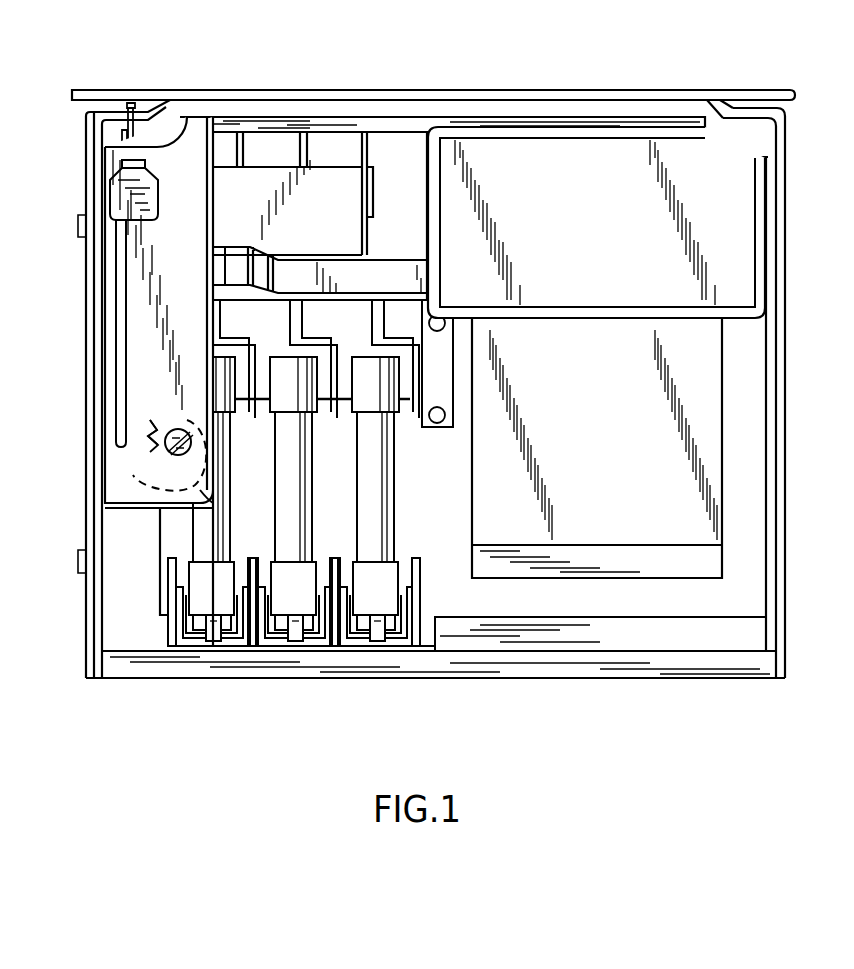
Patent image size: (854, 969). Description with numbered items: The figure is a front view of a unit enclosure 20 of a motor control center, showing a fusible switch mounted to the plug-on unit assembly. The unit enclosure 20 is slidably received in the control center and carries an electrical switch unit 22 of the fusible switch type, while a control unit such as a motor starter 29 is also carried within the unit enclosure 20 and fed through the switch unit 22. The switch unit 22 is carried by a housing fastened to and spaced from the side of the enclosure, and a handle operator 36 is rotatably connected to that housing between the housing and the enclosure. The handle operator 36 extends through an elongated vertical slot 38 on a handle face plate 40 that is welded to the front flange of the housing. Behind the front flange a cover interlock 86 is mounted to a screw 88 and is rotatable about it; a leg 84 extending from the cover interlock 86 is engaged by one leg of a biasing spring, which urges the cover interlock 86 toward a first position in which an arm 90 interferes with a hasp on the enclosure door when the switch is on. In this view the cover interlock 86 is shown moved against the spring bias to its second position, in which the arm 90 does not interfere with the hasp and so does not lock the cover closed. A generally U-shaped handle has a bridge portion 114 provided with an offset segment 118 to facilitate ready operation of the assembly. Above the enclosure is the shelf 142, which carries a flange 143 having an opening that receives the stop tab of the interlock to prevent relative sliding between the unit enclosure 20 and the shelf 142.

The unit enclosure 20 is at (86, 352).
The electrical switch unit 22 is at (335, 221).
The motor starter 29 is at (614, 432).
The handle operator 36 is at (120, 202).
The elongated vertical slot 38 is at (115, 303).
The handle face plate 40 is at (195, 273).
The leg 84 is at (160, 413).
The cover interlock 86 is at (197, 414).
The screw 88 is at (165, 447).
The arm 90 is at (215, 497).
The bridge portion 114 is at (386, 288).
The offset segment 118 is at (233, 265).
The shelf 142 is at (147, 97).
The flange 143 is at (110, 117).